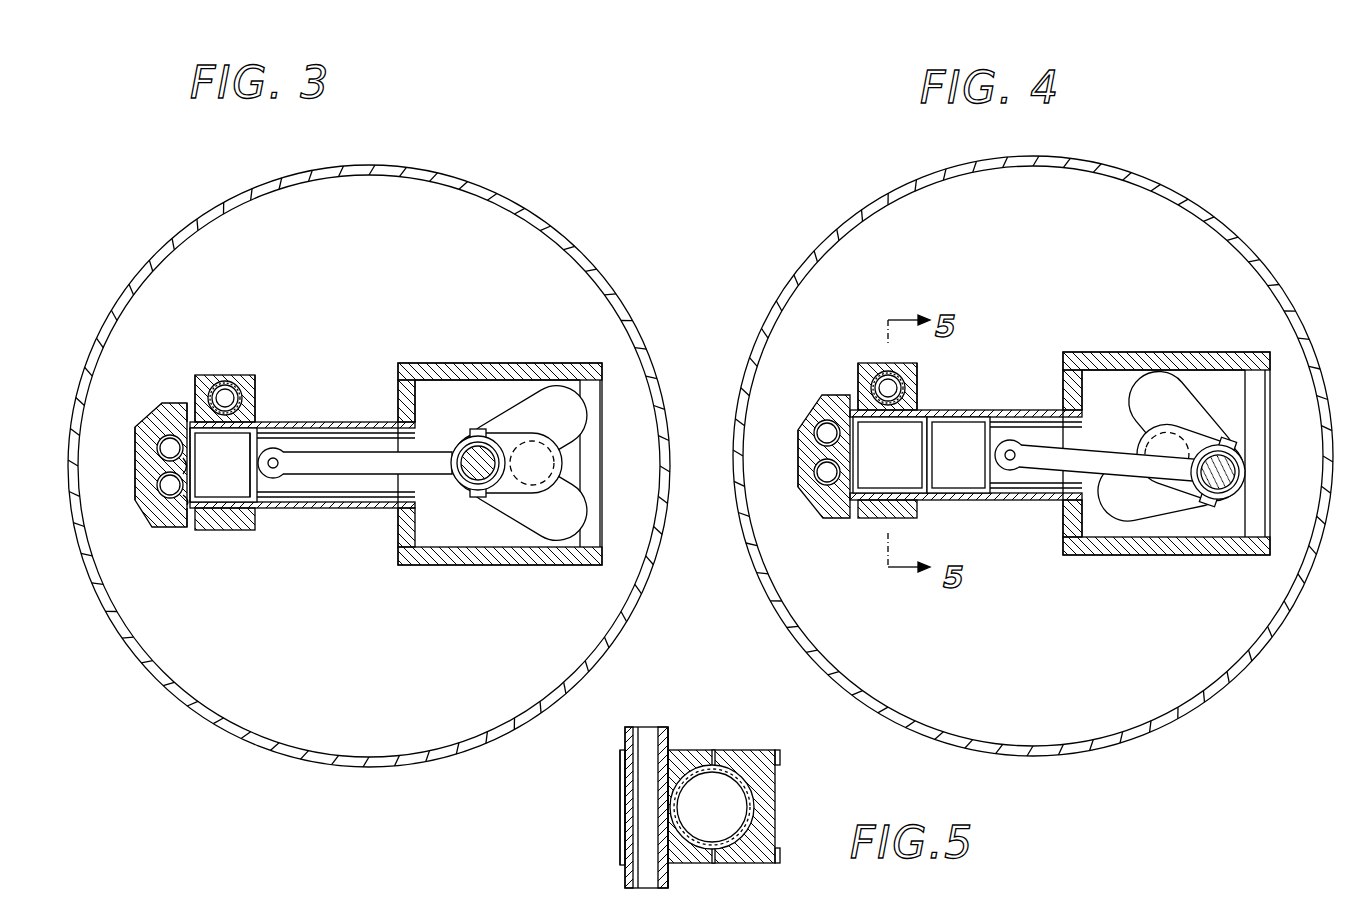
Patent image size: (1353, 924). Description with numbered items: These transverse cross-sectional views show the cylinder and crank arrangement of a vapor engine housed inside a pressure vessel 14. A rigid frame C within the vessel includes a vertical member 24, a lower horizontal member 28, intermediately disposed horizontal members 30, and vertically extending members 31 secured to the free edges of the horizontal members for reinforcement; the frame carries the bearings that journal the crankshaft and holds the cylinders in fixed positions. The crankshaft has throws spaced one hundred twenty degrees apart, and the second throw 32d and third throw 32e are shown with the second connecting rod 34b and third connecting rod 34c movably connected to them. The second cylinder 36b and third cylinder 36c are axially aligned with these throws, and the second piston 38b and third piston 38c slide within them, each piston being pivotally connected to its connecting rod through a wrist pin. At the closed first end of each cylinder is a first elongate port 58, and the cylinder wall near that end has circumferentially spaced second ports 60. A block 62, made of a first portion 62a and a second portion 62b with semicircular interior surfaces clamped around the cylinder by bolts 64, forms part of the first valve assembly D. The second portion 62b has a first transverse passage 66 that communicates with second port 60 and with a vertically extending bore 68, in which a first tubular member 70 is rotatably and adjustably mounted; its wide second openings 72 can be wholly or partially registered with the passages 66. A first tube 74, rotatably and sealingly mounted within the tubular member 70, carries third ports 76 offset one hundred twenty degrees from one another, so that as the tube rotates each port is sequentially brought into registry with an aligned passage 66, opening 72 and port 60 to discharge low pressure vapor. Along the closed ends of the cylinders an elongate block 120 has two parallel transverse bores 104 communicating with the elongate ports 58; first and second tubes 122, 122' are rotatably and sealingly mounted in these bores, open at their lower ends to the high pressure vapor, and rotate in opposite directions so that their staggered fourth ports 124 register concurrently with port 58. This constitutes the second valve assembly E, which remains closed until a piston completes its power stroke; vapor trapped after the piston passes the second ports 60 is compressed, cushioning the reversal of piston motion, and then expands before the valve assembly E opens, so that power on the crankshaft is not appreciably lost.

In FIG. 3, the spherical housing 14 is at (613, 292).
In FIG. 4, the spherical housing 14 is at (1278, 292).
In FIG. 3, the vertical member 24 is at (418, 407).
In FIG. 4, the vertical member 24 is at (1083, 393).
In FIG. 4, the lower horizontal member 28 is at (1230, 409).
In FIG. 3, the intermediately disposed horizontal member 30 is at (525, 462).
In FIG. 3, the vertically extending member 31 is at (526, 363).
In FIG. 4, the vertically extending member 31 is at (1157, 352).
In FIG. 3, the second throw 32d is at (486, 447).
In FIG. 4, the third throw 32e is at (1205, 482).
In FIG. 3, the second connecting rod 34b is at (340, 474).
In FIG. 4, the third connecting rod 34c is at (1105, 478).
In FIG. 3, the second cylinder 36b is at (356, 422).
In FIG. 4, the third cylinder 36c is at (966, 440).
In FIG. 5, the third cylinder 36c is at (746, 758).
In FIG. 3, the second piston 38b is at (258, 489).
In FIG. 4, the third piston 38c is at (982, 466).
In FIG. 3, the first elongate port 58 is at (240, 488).
In FIG. 3, the second port 60 is at (240, 426).
In FIG. 4, the second port 60 is at (920, 398).
In FIG. 5, the second port 60 is at (678, 815).
In FIG. 3, the block 62 is at (256, 386).
In FIG. 4, the block 62 is at (917, 368).
In FIG. 5, the block 62 is at (623, 800).
In FIG. 5, the first portion 62a is at (745, 863).
In FIG. 5, the second portion 62b is at (690, 863).
In FIG. 5, the bolt 64 is at (782, 757).
In FIG. 5, the first transverse passage 66 is at (692, 768).
In FIG. 3, the vertically extending bore 68 is at (246, 398).
In FIG. 4, the vertically extending bore 68 is at (918, 382).
In FIG. 5, the vertically extending bore 68 is at (672, 760).
In FIG. 3, the first tubular member 70 is at (234, 387).
In FIG. 4, the first tubular member 70 is at (885, 372).
In FIG. 5, the first tubular member 70 is at (636, 727).
In FIG. 3, the second opening 72 is at (234, 464).
In FIG. 4, the second opening 72 is at (890, 455).
In FIG. 5, the second opening 72 is at (677, 888).
In FIG. 3, the first tube 74 is at (224, 383).
In FIG. 4, the first tube 74 is at (866, 384).
In FIG. 5, the first tube 74 is at (636, 890).
In FIG. 3, the third port 76 is at (192, 412).
In FIG. 4, the third port 76 is at (860, 394).
In FIG. 5, the third port 76 is at (646, 775).
In FIG. 3, the transverse bore 104 is at (156, 449).
In FIG. 3, the elongate block 120 is at (150, 418).
In FIG. 4, the elongate block 120 is at (814, 410).
In FIG. 3, the first tube 122 is at (137, 471).
In FIG. 3, the roller link 122' is at (140, 519).
In FIG. 3, the fourth port 124 is at (181, 418).
In FIG. 3, the rigid frame C is at (546, 566).
In FIG. 4, the rigid frame C is at (1185, 556).
In FIG. 3, the first valve assembly D is at (262, 368).
In FIG. 4, the first valve assembly D is at (918, 364).
In FIG. 5, the first valve assembly D is at (620, 832).
In FIG. 3, the second valve assembly E is at (138, 436).
In FIG. 4, the second valve assembly E is at (800, 446).